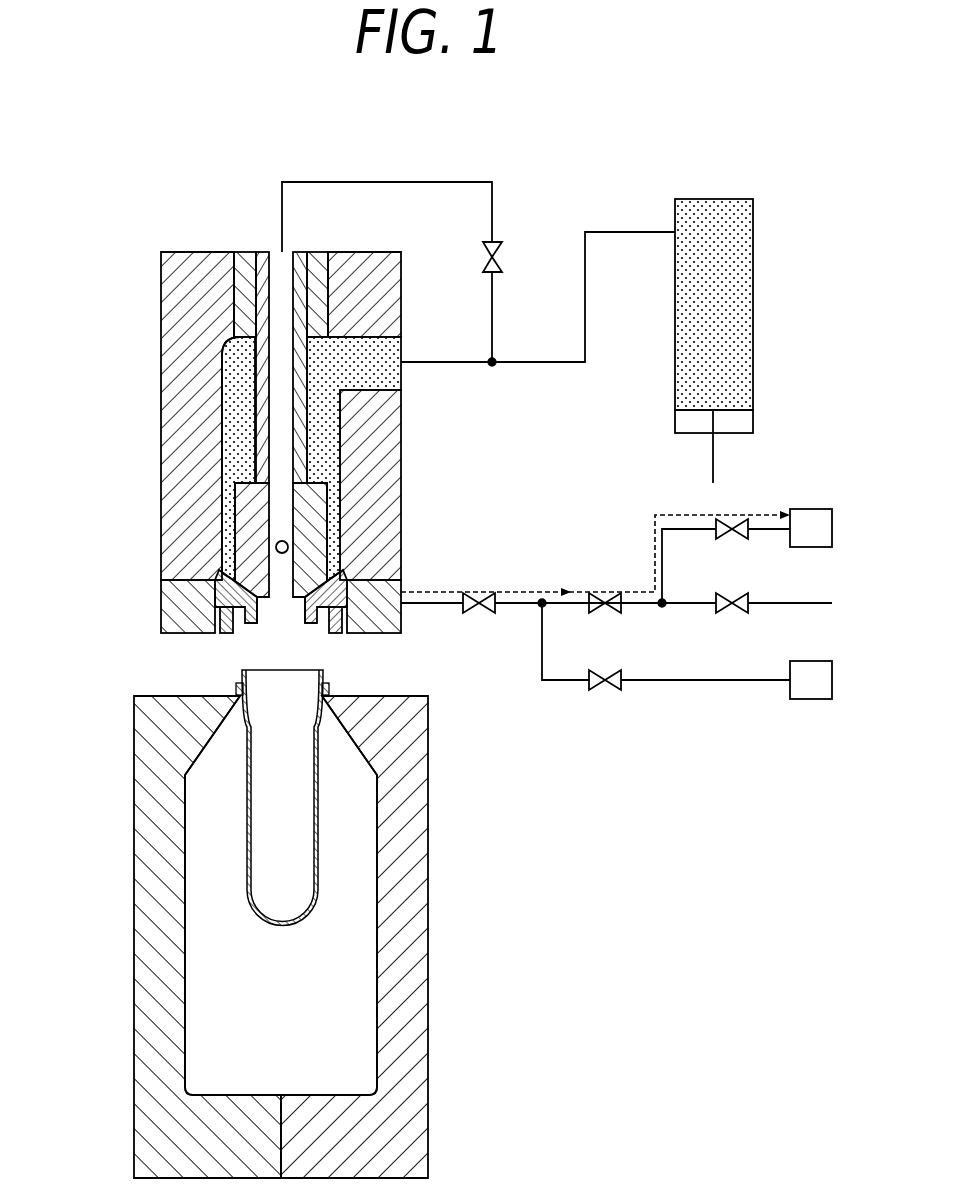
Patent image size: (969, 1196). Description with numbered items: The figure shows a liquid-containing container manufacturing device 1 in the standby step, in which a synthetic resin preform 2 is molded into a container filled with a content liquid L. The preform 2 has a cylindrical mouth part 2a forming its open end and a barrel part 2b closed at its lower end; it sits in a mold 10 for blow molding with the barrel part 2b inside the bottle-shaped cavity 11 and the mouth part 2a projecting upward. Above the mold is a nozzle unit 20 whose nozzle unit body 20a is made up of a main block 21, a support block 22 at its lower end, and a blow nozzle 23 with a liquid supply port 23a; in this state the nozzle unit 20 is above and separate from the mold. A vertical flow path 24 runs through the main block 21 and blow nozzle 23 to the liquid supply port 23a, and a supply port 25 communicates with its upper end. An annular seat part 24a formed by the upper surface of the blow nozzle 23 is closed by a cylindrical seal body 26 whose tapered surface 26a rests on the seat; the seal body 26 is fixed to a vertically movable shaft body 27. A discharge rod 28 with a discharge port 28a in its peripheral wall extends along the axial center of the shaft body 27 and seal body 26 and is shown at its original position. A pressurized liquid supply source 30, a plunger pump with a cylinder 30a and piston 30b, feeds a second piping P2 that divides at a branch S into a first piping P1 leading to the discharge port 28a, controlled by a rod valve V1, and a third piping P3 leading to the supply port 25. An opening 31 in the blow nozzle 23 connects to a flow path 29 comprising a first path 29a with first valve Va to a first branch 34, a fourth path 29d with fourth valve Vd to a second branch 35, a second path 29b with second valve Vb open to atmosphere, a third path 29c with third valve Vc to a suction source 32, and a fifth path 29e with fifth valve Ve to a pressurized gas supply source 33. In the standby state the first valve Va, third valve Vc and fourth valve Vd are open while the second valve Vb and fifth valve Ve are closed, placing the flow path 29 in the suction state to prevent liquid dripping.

The liquid-containing container manufacturing device 1 is at (580, 768).
The preform 2 is at (320, 825).
The mouth part 2a is at (240, 672).
The barrel part 2b is at (247, 808).
The mold for blow molding 10 is at (130, 811).
The cavity 11 is at (377, 965).
The nozzle unit 20 is at (135, 262).
The nozzle unit body 20a is at (160, 295).
The main block 21 is at (173, 393).
The support block 22 is at (178, 603).
The blow nozzle 23 is at (215, 580).
The liquid supply port 23a is at (307, 607).
The vertical flow path 24 is at (233, 407).
The annular seat part 24a is at (318, 562).
The supply port 25 is at (378, 343).
The seal body 26 is at (330, 507).
The tapered surface 26a is at (222, 617).
The shaft body 27 is at (300, 432).
The discharge rod 28 is at (278, 507).
The discharge port 28a is at (273, 543).
The flow path 29 is at (401, 573).
The first path 29a is at (595, 557).
The second path 29b is at (767, 602).
The third path 29c is at (682, 529).
The fourth path 29d is at (637, 602).
The fifth path 29e is at (700, 680).
The pressurized liquid supply source 30 is at (722, 200).
The cylinder 30a is at (754, 282).
The piston 30b is at (740, 412).
The opening 31 is at (295, 603).
The suction source 32 is at (815, 509).
The pressurized gas supply source 33 is at (810, 699).
The first branch 34 is at (540, 607).
The second branch 35 is at (662, 607).
The liquid L is at (238, 367).
The first piping P1 is at (392, 182).
The second piping P2 is at (537, 362).
The third piping P3 is at (443, 363).
The branch S is at (493, 366).
The rod valve V1 is at (502, 258).
The first valve Va is at (475, 613).
The second valve Vb is at (735, 613).
The third valve Vc is at (735, 540).
The fourth valve Vd is at (610, 613).
The fifth valve Ve is at (610, 690).